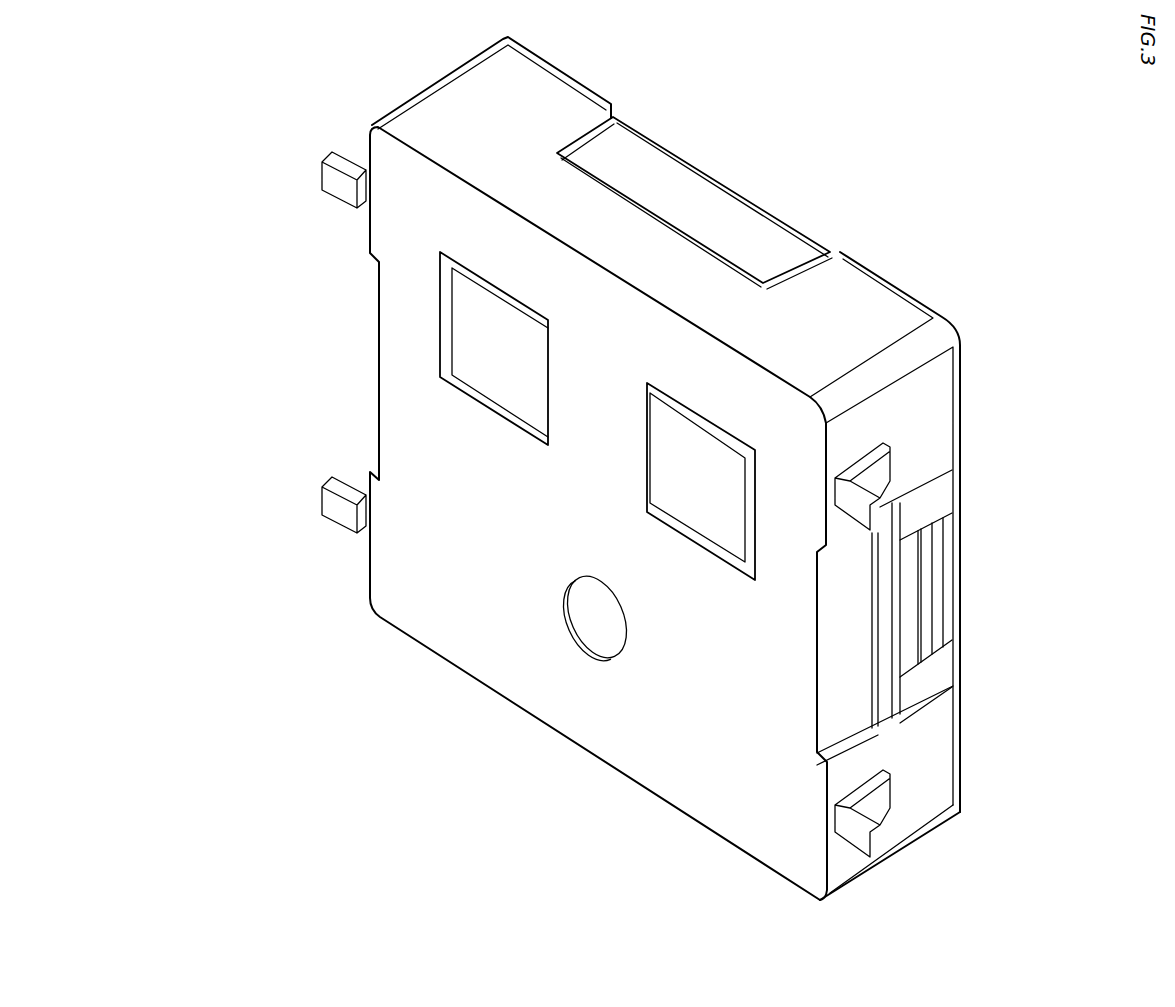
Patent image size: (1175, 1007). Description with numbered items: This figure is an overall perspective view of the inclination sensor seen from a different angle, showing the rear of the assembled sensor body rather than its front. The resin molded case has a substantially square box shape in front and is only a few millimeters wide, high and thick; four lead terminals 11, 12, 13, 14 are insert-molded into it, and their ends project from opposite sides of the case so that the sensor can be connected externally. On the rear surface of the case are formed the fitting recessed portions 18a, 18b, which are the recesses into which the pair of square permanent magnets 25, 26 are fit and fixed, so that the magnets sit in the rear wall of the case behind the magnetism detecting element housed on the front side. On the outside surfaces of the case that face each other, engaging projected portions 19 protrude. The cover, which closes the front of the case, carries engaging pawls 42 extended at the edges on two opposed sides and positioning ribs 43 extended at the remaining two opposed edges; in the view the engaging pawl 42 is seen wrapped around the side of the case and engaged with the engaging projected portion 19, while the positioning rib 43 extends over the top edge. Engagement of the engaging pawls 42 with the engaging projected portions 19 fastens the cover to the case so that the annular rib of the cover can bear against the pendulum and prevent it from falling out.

The lead terminal 11 is at (860, 517).
The lead terminal 12 is at (860, 845).
The lead terminal 13 is at (333, 178).
The lead terminal 14 is at (330, 503).
The fitting recessed portion 18a is at (705, 413).
The fitting recessed portion 18b is at (502, 292).
The engaging projected portion 19 is at (910, 598).
The permanent magnet 25 is at (700, 503).
The permanent magnet 26 is at (477, 338).
The engaging pawl 42 is at (933, 670).
The positioning rib 43 is at (697, 203).